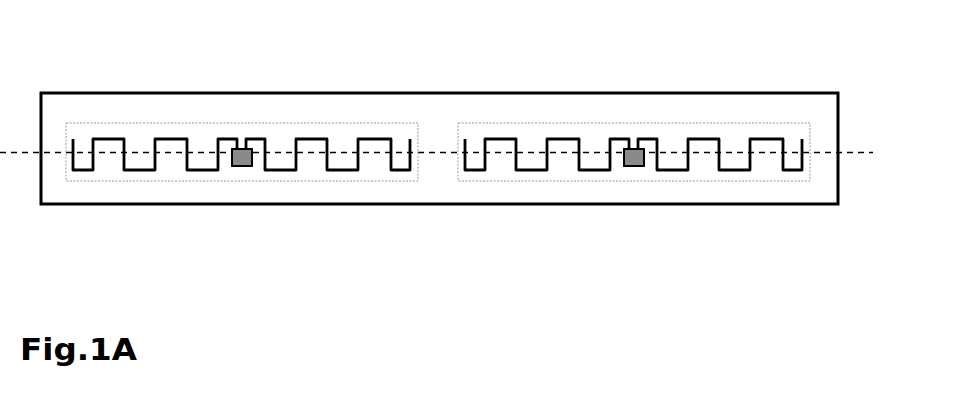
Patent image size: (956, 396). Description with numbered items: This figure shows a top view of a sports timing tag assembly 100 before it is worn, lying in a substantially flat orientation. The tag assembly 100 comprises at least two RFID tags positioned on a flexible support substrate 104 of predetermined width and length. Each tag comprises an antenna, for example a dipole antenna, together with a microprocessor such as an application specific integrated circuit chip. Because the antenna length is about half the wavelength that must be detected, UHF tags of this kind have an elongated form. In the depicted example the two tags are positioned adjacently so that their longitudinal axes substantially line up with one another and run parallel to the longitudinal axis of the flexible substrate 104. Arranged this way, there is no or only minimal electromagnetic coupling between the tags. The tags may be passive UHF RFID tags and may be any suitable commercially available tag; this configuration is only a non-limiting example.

The sports timing tag assembly 100 is at (695, 92).
The flexible support substrate 104 is at (76, 104).